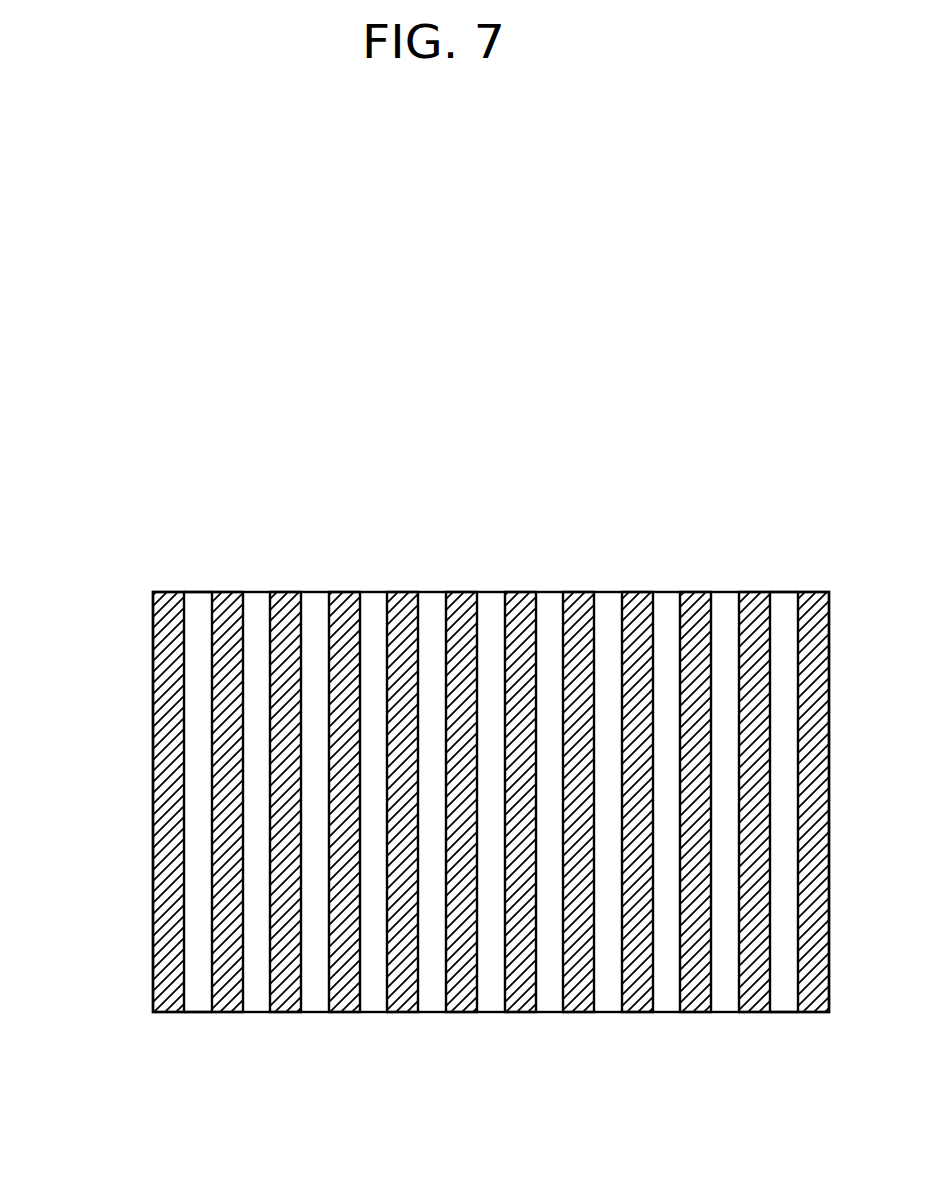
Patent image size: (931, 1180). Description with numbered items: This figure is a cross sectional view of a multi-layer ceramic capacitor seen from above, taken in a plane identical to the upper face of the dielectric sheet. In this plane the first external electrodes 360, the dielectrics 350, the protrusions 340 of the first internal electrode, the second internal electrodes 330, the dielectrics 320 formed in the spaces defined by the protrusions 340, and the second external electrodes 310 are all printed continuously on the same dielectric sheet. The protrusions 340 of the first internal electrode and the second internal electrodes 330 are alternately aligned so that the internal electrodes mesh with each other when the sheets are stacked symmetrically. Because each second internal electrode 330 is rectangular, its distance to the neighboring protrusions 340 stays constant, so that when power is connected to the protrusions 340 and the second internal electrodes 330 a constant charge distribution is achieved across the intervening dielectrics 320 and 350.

The second external electrode 310 is at (815, 598).
The dielectric formed in spaces defined by the protrusions of the first internal ele 320 is at (782, 605).
The second internal electrode 330 is at (755, 597).
The protrusion of the first internal electrode 340 is at (698, 598).
The dielectric 350 is at (200, 600).
The first external electrode 360 is at (165, 752).